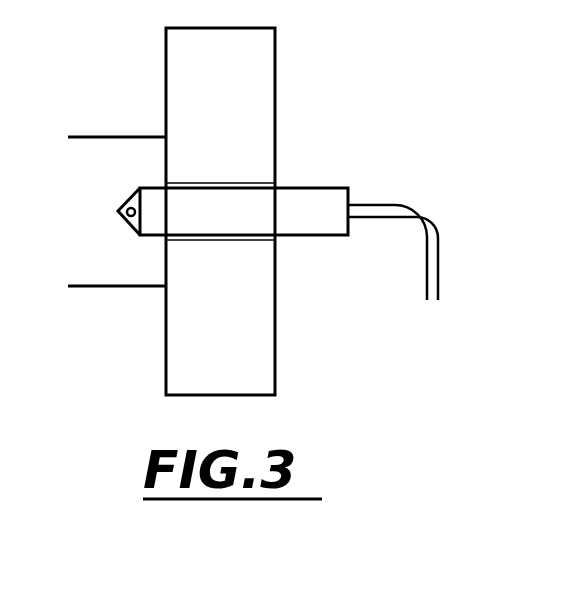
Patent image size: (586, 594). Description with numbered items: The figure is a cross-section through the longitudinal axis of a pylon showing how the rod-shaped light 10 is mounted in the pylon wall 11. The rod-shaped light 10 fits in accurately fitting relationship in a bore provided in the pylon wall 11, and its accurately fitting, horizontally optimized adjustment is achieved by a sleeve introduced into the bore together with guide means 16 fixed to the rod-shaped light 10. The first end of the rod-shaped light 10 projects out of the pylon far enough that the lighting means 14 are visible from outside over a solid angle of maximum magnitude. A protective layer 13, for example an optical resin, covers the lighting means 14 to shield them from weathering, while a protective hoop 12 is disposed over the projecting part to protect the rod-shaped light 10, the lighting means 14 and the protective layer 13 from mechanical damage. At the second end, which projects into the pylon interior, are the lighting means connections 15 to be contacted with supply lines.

The rod-shaped light 10 is at (220, 223).
The pylon wall 11 is at (229, 132).
The protective hoop 12 is at (94, 136).
The protective layer 13 is at (126, 212).
The lighting means 14 is at (127, 208).
The lighting means connections 15 is at (434, 255).
The guide means 16 is at (238, 184).